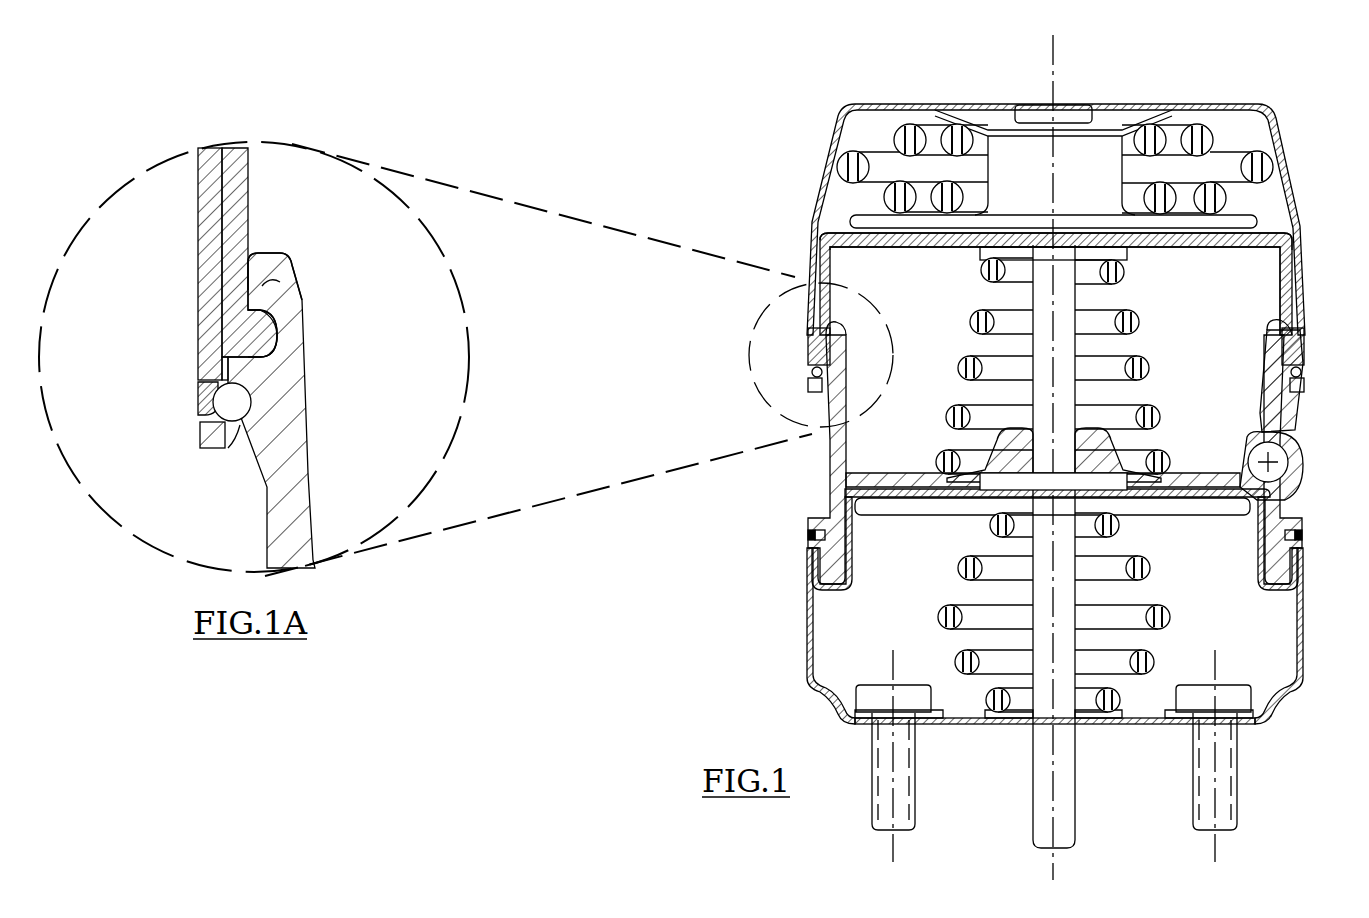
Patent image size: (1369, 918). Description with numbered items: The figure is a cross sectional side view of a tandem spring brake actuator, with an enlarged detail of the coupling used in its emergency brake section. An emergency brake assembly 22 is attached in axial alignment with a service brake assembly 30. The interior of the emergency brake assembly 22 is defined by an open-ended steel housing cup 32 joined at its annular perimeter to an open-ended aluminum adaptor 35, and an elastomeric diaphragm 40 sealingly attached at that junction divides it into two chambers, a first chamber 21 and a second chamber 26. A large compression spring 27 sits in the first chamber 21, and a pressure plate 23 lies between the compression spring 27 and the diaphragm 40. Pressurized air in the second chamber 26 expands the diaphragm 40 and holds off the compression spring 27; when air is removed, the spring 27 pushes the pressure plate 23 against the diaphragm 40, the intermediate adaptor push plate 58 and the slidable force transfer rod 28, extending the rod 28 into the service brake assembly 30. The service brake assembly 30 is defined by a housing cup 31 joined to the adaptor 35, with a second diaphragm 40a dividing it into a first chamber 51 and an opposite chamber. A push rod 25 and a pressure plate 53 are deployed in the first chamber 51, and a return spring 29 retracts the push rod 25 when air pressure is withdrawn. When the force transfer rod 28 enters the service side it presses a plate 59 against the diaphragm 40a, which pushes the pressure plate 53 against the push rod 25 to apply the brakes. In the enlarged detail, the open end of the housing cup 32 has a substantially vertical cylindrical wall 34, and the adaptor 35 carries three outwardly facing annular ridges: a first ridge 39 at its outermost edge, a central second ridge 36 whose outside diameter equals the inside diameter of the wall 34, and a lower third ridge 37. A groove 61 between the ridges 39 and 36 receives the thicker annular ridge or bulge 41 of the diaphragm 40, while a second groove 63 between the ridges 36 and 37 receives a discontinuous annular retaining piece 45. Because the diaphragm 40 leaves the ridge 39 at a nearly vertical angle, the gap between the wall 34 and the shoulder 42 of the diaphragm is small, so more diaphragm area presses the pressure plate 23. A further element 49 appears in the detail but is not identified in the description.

In FIG. 1, the first chamber 21 is at (838, 203).
In FIG. 1, the emergency brake assembly 22 is at (697, 147).
In FIG. 1, the pressure plate 23 is at (1248, 226).
In FIG. 1, the push rod 25 is at (1065, 816).
In FIG. 1, the second chamber 26 is at (1272, 275).
In FIG. 1, the compression spring 27 is at (1210, 138).
In FIG. 1, the force transfer rod 28 is at (1062, 298).
In FIG. 1, the return spring 29 is at (1140, 615).
In FIG. 1, the service brake assembly 30 is at (727, 657).
In FIG. 1, the housing cup 31 is at (1302, 597).
In FIG. 1, the housing cup 32 is at (838, 122).
In FIG. 1A, the cylindrical wall 34 is at (212, 232).
In FIG. 1, the cylindrical wall 34 is at (1302, 322).
In FIG. 1A, the adaptor 35 is at (292, 484).
In FIG. 1, the adaptor 35 is at (834, 470).
In FIG. 1A, the second annular ridge 36 is at (224, 358).
In FIG. 1A, the third annular ridge 37 is at (232, 424).
In FIG. 1, the third annular ridge 37 is at (1302, 386).
In FIG. 1A, the first annular ridge 39 is at (276, 262).
In FIG. 1, the first annular ridge 39 is at (1275, 322).
In FIG. 1A, the diaphragm 40 is at (242, 182).
In FIG. 1, the diaphragm 40 is at (830, 256).
In FIG. 1, the second diaphragm 40a is at (1272, 586).
In FIG. 1A, the annular ridge 41 is at (262, 336).
In FIG. 1, the shoulder 42 is at (830, 236).
In FIG. 1A, the retaining piece 45 is at (230, 430).
In FIG. 1, the retaining piece 45 is at (1301, 375).
In FIG. 1A, the seal 49 is at (198, 402).
In FIG. 1, the first chamber 51 is at (1275, 666).
In FIG. 1, the pressure plate 53 is at (1268, 505).
In FIG. 1, the adaptor push plate 58 is at (986, 256).
In FIG. 1, the plate 59 is at (1105, 488).
In FIG. 1A, the groove 61 is at (290, 300).
In FIG. 1A, the second groove 63 is at (240, 404).